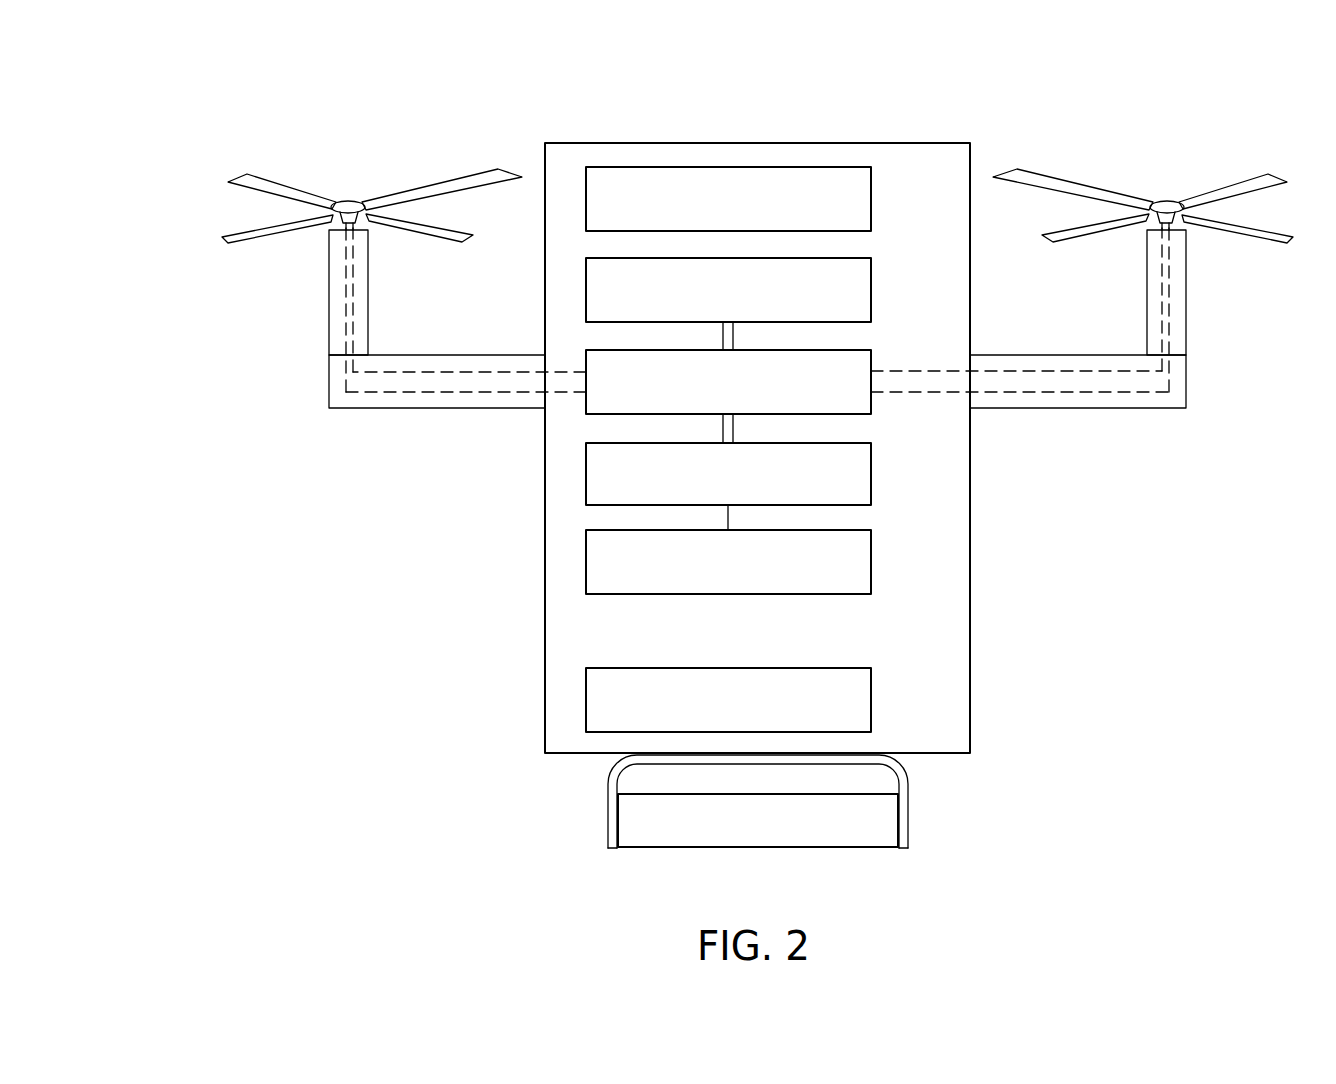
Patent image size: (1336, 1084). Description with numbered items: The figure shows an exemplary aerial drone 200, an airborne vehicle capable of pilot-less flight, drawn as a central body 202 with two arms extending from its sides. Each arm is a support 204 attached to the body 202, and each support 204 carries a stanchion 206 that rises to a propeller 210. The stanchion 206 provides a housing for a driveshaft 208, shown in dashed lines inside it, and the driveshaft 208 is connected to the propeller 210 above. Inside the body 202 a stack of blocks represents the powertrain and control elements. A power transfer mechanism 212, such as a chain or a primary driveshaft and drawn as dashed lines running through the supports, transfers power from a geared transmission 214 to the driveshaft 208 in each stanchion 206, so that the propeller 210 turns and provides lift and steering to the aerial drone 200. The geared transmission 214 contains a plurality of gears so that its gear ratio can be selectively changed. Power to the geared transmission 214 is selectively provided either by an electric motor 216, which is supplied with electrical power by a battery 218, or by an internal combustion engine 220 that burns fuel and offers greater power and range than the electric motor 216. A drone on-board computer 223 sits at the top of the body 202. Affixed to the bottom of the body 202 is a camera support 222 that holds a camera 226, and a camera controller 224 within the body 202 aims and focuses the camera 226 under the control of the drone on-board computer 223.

The aerial drone 200 is at (886, 119).
The body 202 is at (808, 648).
The support 204 is at (360, 408).
The stanchion 206 is at (329, 342).
The driveshaft 208 is at (345, 306).
The propeller 210 is at (222, 173).
The power transfer mechanism 212 is at (488, 400).
The geared transmission 214 is at (871, 393).
The electric motor 216 is at (871, 475).
The battery 218 is at (871, 565).
The internal combustion engine 220 is at (871, 290).
The camera support 222 is at (908, 812).
The drone on-board computer 223 is at (871, 200).
The camera controller 224 is at (871, 703).
The camera 226 is at (757, 848).